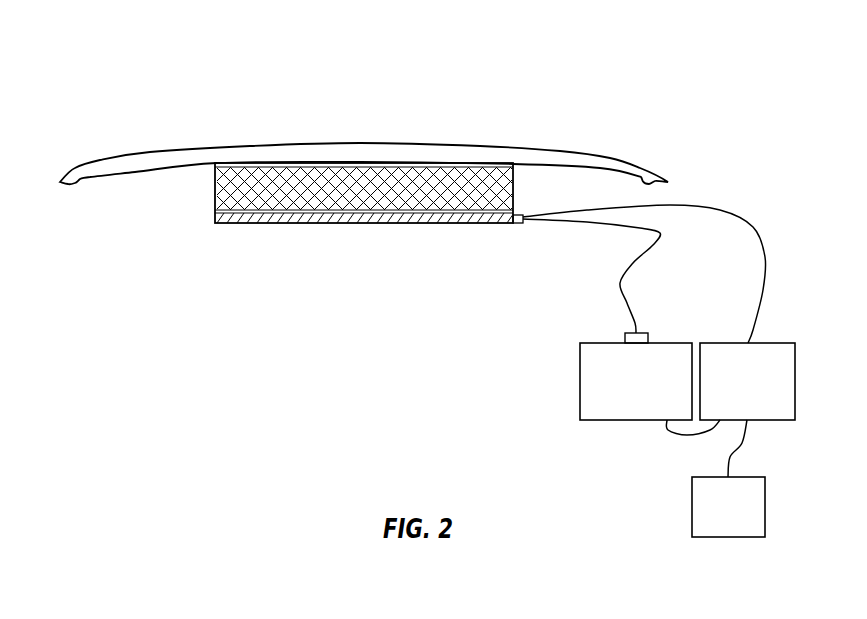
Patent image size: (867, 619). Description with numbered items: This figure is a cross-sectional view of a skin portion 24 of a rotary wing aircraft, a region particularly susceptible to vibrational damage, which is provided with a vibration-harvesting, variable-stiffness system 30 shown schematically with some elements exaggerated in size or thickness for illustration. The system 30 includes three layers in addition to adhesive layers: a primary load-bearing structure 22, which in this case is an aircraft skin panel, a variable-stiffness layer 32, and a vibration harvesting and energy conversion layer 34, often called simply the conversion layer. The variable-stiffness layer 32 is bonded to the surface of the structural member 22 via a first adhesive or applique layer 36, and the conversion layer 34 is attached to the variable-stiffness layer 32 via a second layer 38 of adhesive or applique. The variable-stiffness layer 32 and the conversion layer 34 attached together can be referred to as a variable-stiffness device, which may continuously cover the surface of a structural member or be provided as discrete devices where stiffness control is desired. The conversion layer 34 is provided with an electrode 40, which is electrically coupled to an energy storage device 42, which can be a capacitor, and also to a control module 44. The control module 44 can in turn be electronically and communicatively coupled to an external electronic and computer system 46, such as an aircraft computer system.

The primary load-bearing structure 22 is at (423, 152).
The skin portion 24 is at (113, 88).
The vibration-harvesting variable-stiffness system 30 is at (352, 297).
The variable-stiffness layer 32 is at (232, 196).
The vibration harvesting and energy conversion layer 34 is at (382, 222).
The first adhesive or applique layer 36 is at (343, 162).
The second layer of adhesive or applique 38 is at (317, 213).
The electrode 40 is at (512, 222).
The energy storage device 42 is at (580, 383).
The control module 44 is at (775, 343).
The external electronic and computer system 46 is at (715, 520).